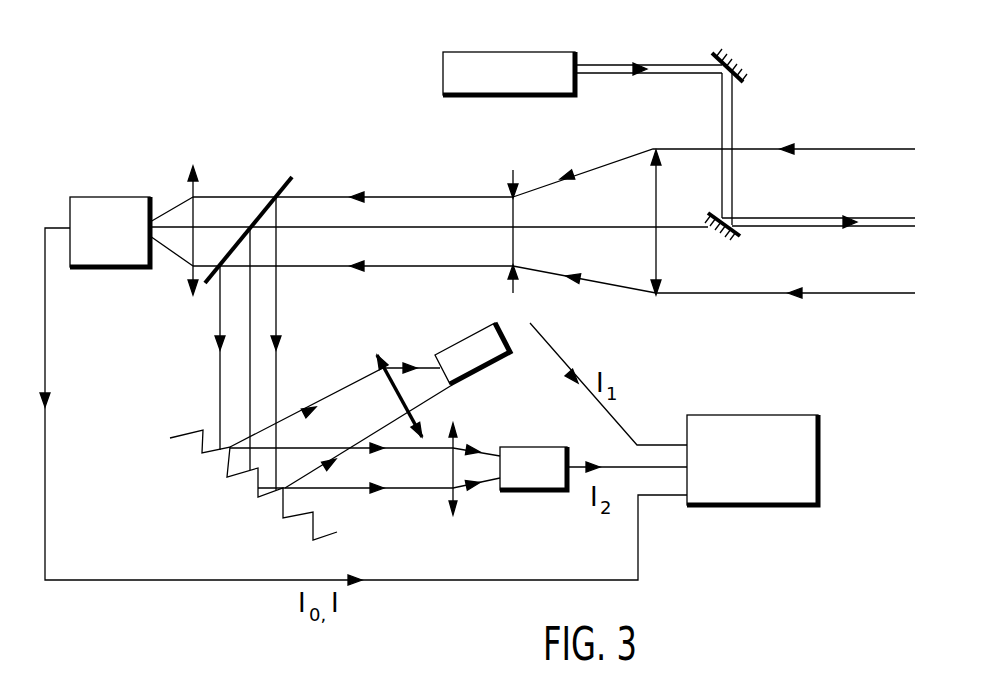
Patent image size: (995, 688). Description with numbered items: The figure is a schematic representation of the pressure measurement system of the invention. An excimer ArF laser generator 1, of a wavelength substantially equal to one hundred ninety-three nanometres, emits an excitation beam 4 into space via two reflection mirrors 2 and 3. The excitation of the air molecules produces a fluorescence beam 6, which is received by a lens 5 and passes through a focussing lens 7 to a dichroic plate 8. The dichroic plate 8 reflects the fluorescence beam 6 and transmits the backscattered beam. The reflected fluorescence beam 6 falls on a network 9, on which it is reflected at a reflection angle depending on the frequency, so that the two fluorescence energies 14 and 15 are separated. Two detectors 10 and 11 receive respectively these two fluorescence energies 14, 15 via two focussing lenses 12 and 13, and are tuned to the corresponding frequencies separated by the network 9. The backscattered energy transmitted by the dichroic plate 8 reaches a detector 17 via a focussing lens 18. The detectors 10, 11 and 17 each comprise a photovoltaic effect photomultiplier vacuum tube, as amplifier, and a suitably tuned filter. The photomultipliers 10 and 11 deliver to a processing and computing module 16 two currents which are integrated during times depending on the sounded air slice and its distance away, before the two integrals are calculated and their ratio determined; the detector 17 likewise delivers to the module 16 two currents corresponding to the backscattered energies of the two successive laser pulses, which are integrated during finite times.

The excimer ArF laser generator 1 is at (522, 77).
The reflection mirror 2 is at (712, 52).
The reflection mirror 3 is at (742, 236).
The excitation beam 4 is at (893, 227).
The lens 5 is at (655, 262).
The fluorescence beam 6 is at (838, 294).
The focussing lens 7 is at (512, 208).
The dichroic plate 8 is at (275, 190).
The network 9 is at (277, 500).
The detector 10 is at (480, 350).
The detector 11 is at (528, 477).
The focussing lens 12 is at (383, 385).
The focussing lens 13 is at (450, 490).
The fluorescence energy 14 is at (367, 430).
The fluorescence energy 15 is at (423, 482).
The processing and computing module 16 is at (800, 457).
The detector 17 is at (100, 213).
The focussing lens 18 is at (200, 190).